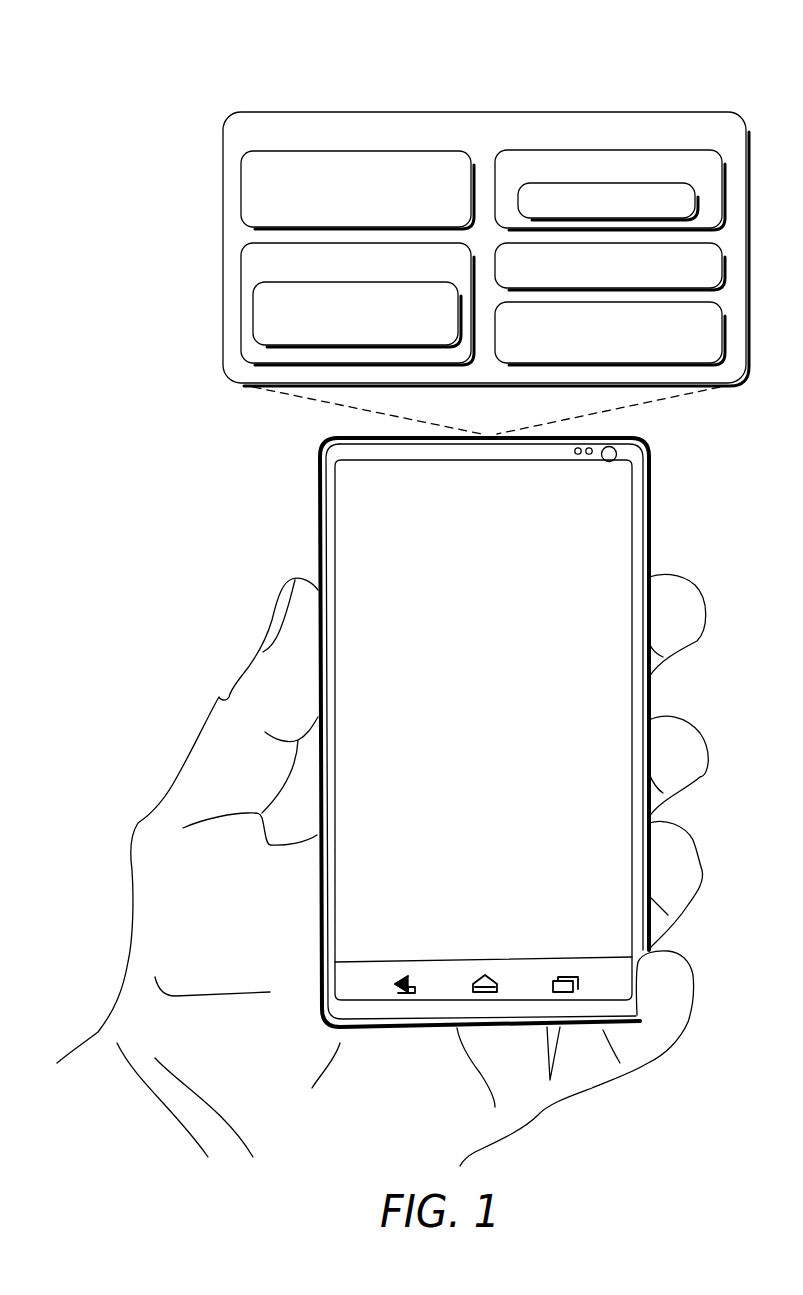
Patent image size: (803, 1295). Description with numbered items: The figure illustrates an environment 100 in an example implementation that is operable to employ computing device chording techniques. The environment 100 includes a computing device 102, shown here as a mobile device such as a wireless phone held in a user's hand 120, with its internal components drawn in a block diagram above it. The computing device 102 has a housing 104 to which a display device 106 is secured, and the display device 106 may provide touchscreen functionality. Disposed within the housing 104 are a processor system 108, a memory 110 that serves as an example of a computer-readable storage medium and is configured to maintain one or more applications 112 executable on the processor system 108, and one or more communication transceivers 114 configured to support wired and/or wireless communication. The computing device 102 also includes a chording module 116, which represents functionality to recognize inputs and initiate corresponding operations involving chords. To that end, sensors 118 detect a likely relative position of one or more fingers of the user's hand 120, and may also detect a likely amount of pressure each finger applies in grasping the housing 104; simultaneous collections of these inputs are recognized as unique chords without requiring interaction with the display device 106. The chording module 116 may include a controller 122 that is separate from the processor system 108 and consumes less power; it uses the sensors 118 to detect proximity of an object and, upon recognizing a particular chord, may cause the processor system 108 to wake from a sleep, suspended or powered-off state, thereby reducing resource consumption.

The environment 100 is at (168, 82).
The computing device 102 is at (582, 141).
The housing 104 is at (320, 500).
The display device 106 is at (613, 499).
The processor system 108 is at (456, 197).
The memory 110 is at (410, 273).
The applications 112 is at (375, 333).
The communication transceivers 114 is at (684, 351).
The chording module 116 is at (704, 178).
The sensors 118 is at (663, 274).
The user's hand 120 is at (215, 637).
The controller 122 is at (669, 208).